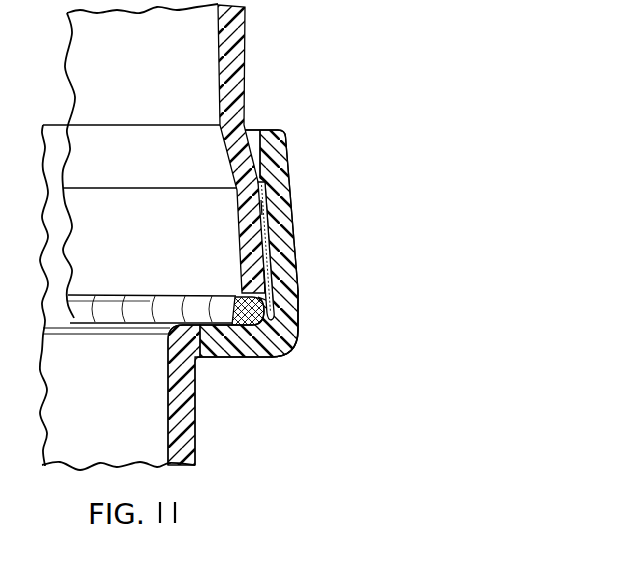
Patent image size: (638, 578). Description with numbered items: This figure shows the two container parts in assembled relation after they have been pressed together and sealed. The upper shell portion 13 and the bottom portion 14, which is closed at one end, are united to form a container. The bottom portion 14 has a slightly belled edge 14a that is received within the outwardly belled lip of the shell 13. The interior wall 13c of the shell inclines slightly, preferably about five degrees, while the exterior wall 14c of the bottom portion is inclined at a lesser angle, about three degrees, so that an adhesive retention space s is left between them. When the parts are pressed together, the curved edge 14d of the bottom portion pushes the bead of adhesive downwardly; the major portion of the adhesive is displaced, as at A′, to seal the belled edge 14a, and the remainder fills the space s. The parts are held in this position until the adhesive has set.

The bottom portion 14 is at (248, 43).
The belled edge 14a is at (290, 193).
The exterior wall 14c is at (264, 227).
The curved edge 14d is at (296, 324).
The upper shell portion 13 is at (198, 411).
The interior wall 13c is at (296, 237).
The adhesive retention space s is at (255, 211).
The displaced adhesive major portion A′ is at (237, 297).